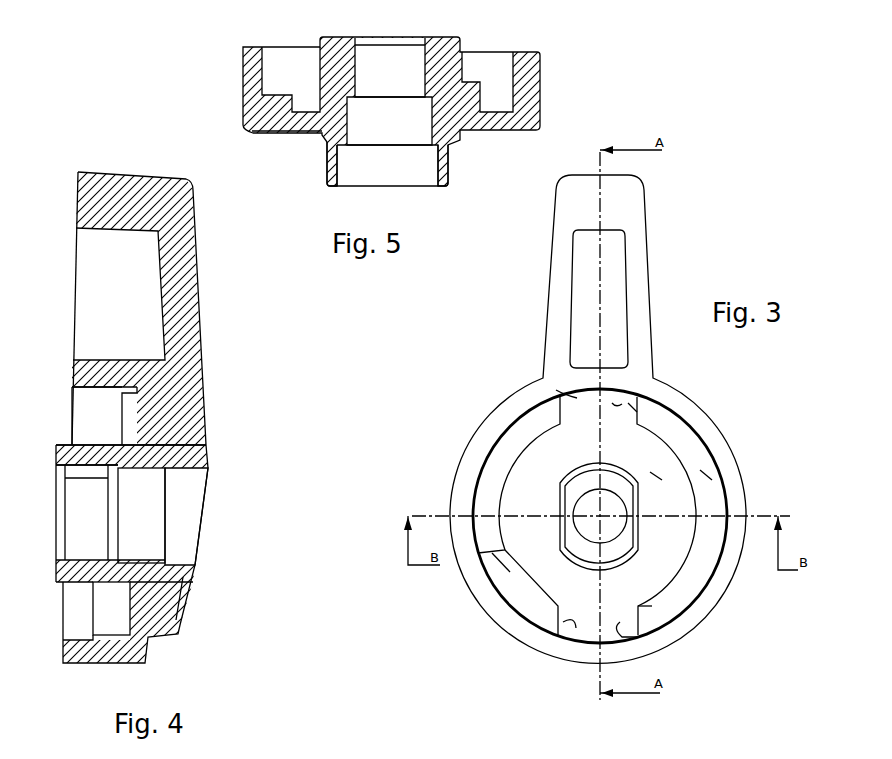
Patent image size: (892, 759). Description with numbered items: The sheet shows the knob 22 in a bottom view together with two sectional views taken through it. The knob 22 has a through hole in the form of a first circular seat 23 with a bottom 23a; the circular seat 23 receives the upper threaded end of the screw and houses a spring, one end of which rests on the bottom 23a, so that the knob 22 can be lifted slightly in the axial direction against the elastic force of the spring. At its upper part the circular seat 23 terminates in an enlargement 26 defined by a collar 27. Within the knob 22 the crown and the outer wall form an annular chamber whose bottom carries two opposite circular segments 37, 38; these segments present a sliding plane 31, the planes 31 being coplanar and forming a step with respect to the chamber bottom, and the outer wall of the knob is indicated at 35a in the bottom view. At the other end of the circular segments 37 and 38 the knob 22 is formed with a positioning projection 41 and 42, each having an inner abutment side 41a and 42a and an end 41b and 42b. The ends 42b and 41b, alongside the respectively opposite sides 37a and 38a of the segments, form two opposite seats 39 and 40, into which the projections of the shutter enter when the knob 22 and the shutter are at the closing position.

In FIG. 4, the knob 22 is at (148, 193).
In FIG. 5, the knob 22 is at (541, 74).
In FIG. 3, the knob 22 is at (642, 273).
In FIG. 4, the first circular seat 23 is at (140, 475).
In FIG. 5, the first circular seat 23 is at (428, 120).
In FIG. 4, the bottom 23a is at (147, 545).
In FIG. 5, the bottom 23a is at (352, 100).
In FIG. 4, the enlargement 26 is at (190, 473).
In FIG. 5, the enlargement 26 is at (345, 176).
In FIG. 4, the collar 27 is at (203, 460).
In FIG. 5, the collar 27 is at (452, 168).
In FIG. 4, the sliding plane 31 is at (120, 402).
In FIG. 3, the guide surface 35a is at (706, 474).
In FIG. 4, the circular segment 37 is at (127, 428).
In FIG. 3, the circular segment 37 is at (495, 467).
In FIG. 3, the side 37a is at (577, 396).
In FIG. 3, the circular segment 38 is at (710, 542).
In FIG. 3, the side 38a is at (628, 636).
In FIG. 3, the seat 39 is at (640, 398).
In FIG. 3, the seat 40 is at (590, 635).
In FIG. 3, the positioning projection 41 is at (515, 590).
In FIG. 3, the inner abutment side 41a is at (500, 557).
In FIG. 3, the end 41b is at (573, 622).
In FIG. 3, the positioning projection 42 is at (680, 440).
In FIG. 3, the inner abutment side 42a is at (656, 476).
In FIG. 3, the end 42b is at (614, 404).